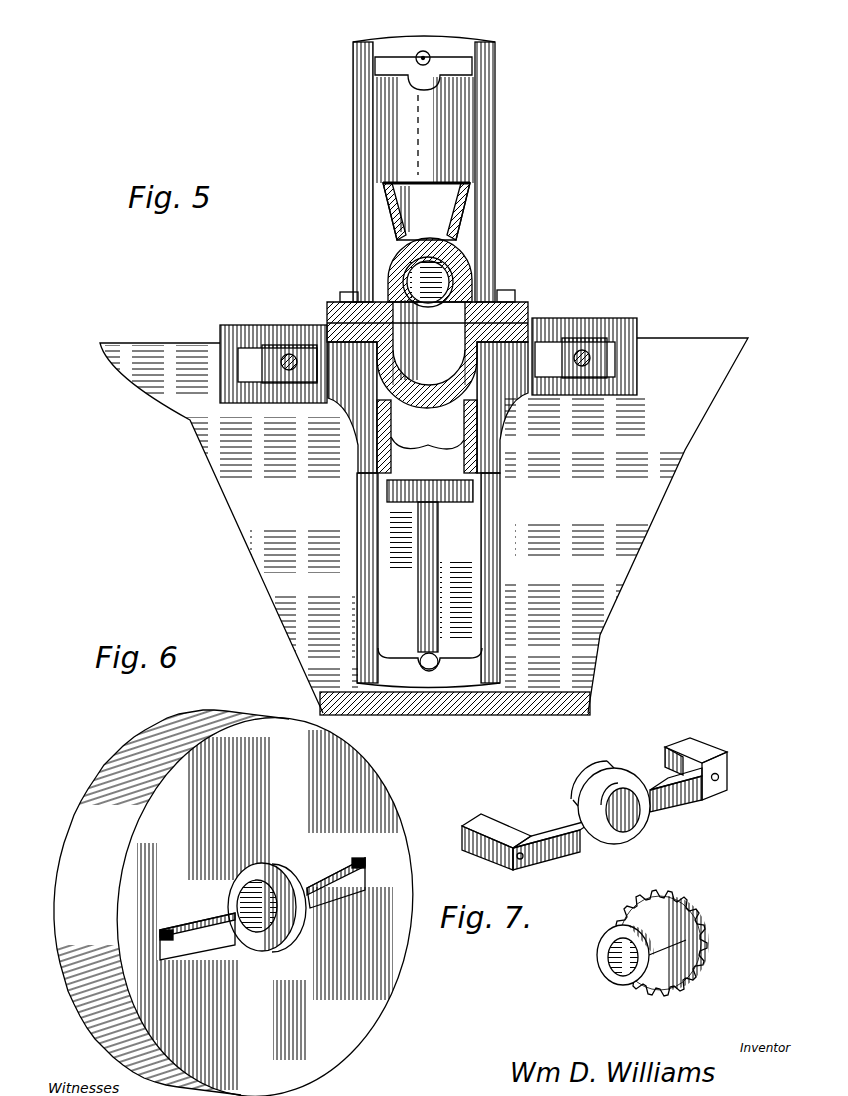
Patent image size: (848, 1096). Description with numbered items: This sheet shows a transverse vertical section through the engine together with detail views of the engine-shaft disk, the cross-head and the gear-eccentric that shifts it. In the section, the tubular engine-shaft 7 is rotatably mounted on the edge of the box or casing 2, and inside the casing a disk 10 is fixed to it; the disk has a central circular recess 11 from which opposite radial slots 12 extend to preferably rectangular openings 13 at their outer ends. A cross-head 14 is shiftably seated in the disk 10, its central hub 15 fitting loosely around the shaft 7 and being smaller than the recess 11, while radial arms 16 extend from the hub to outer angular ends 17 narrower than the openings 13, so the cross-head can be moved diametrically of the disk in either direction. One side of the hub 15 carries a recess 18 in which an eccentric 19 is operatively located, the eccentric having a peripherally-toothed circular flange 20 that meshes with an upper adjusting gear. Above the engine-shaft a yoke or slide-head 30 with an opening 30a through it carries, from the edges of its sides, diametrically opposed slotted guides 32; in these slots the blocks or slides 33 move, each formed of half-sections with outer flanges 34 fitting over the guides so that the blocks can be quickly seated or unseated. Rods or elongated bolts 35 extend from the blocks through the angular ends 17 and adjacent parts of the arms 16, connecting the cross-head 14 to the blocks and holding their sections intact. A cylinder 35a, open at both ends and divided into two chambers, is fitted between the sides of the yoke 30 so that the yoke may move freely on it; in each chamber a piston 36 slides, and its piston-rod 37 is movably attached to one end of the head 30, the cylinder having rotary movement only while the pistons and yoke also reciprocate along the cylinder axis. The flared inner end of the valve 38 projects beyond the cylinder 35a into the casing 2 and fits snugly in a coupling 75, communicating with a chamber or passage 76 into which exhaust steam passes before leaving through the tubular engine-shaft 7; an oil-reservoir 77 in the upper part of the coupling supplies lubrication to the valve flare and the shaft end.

In FIG. 5, the box or casing 2 is at (424, 525).
In FIG. 5, the engine-shaft 7 is at (588, 700).
In FIG. 6, the disk 10 is at (245, 897).
In FIG. 6, the central circular recess 11 is at (270, 921).
In FIG. 6, the radial slots 12 is at (248, 895).
In FIG. 6, the openings 13 is at (252, 901).
In FIG. 7, the cross-head 14 is at (555, 830).
In FIG. 7, the central hub 15 is at (610, 791).
In FIG. 7, the radial arms 16 is at (683, 803).
In FIG. 7, the angular ends 17 is at (480, 826).
In FIG. 7, the recess 18 is at (636, 823).
In FIG. 7, the eccentric 19 is at (605, 936).
In FIG. 7, the peripherally-toothed circular flange 20 is at (677, 943).
In FIG. 5, the yoke or slide-head 30 is at (435, 386).
In FIG. 5, the opening 30a is at (497, 284).
In FIG. 5, the slotted guides 32 is at (306, 400).
In FIG. 5, the blocks or slides 33 is at (287, 356).
In FIG. 5, the outer flanges 34 is at (285, 352).
In FIG. 5, the rods or elongated bolts 35 is at (275, 396).
In FIG. 5, the cylinder 35a is at (470, 136).
In FIG. 5, the piston 36 is at (478, 500).
In FIG. 5, the piston-rod 37 is at (432, 78).
In FIG. 5, the valve 38 is at (472, 252).
In FIG. 5, the coupling 75 is at (385, 256).
In FIG. 5, the chamber or passage 76 is at (445, 307).
In FIG. 5, the oil-reservoir 77 is at (410, 201).